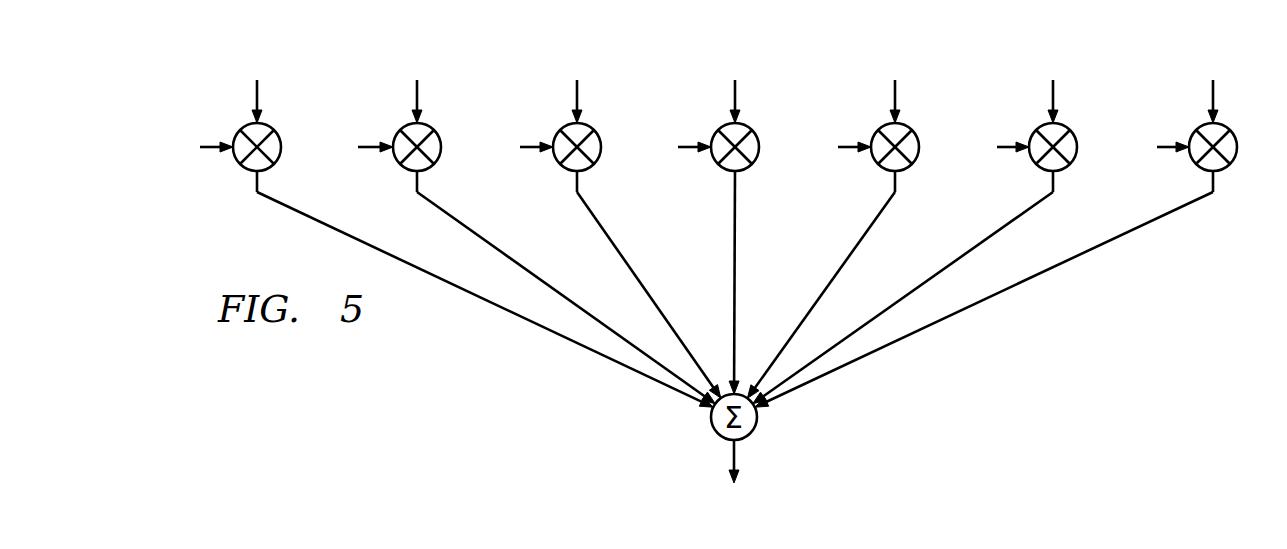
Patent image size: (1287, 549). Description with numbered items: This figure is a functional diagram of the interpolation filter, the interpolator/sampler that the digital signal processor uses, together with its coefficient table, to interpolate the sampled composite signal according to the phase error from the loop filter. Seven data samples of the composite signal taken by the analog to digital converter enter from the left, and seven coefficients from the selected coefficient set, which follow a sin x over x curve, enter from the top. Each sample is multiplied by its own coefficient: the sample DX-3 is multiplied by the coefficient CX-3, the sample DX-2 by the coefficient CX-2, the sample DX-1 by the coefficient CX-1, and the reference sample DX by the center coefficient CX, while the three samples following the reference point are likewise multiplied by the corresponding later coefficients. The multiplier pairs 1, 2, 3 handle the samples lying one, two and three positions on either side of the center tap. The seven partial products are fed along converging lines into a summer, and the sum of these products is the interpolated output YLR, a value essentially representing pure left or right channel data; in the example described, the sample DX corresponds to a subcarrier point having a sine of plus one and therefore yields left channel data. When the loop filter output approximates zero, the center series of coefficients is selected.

The coefficient C x-3 CX-3 is at (255, 80).
The coefficient C x-2 CX-2 is at (412, 80).
The coefficient C x-1 CX-1 is at (576, 80).
The coefficient C x CX is at (746, 80).
The data sample D x-3 DX-3 is at (186, 145).
The data sample D x-2 DX-2 is at (345, 145).
The data sample D x-1 DX-1 is at (505, 145).
The data sample D x DX is at (678, 145).
The multipliers for taps X-1 and X+ 1 is at (736, 260).
The multipliers for taps X-2 and X+ 2 is at (735, 263).
The multipliers for taps X-3 and X+ 3 is at (735, 265).
The summed output Y L,R YLR is at (734, 481).